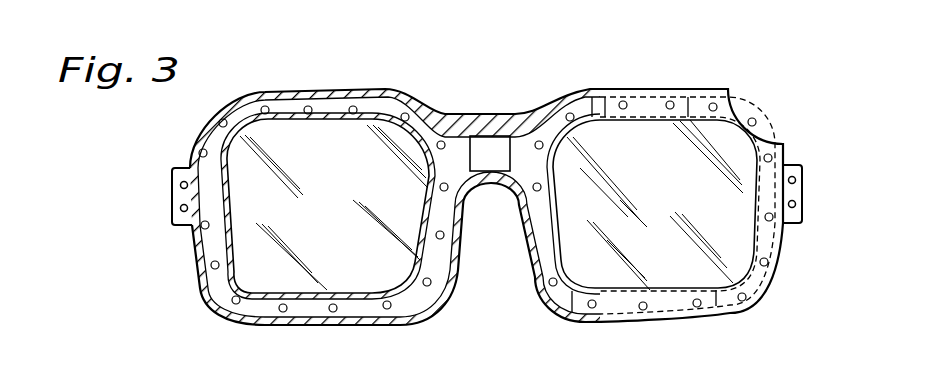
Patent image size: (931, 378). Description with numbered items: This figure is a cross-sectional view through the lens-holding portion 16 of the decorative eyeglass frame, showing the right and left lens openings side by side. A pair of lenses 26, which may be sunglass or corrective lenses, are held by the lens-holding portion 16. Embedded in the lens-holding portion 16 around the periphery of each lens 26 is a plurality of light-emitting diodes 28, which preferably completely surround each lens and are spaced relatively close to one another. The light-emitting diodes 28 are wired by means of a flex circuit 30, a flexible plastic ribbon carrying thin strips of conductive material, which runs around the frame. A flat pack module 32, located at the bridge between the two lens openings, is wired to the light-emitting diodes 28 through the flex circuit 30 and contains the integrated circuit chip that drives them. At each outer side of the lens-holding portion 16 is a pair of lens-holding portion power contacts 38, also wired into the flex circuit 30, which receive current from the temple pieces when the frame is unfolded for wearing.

The lens-holding portion 16 is at (437, 108).
The lenses 26 is at (338, 193).
The light-emitting diodes 28 is at (266, 104).
The flex circuit 30 is at (366, 318).
The flat pack module 32 is at (490, 146).
The lens-holding portion power contacts 38 is at (178, 209).